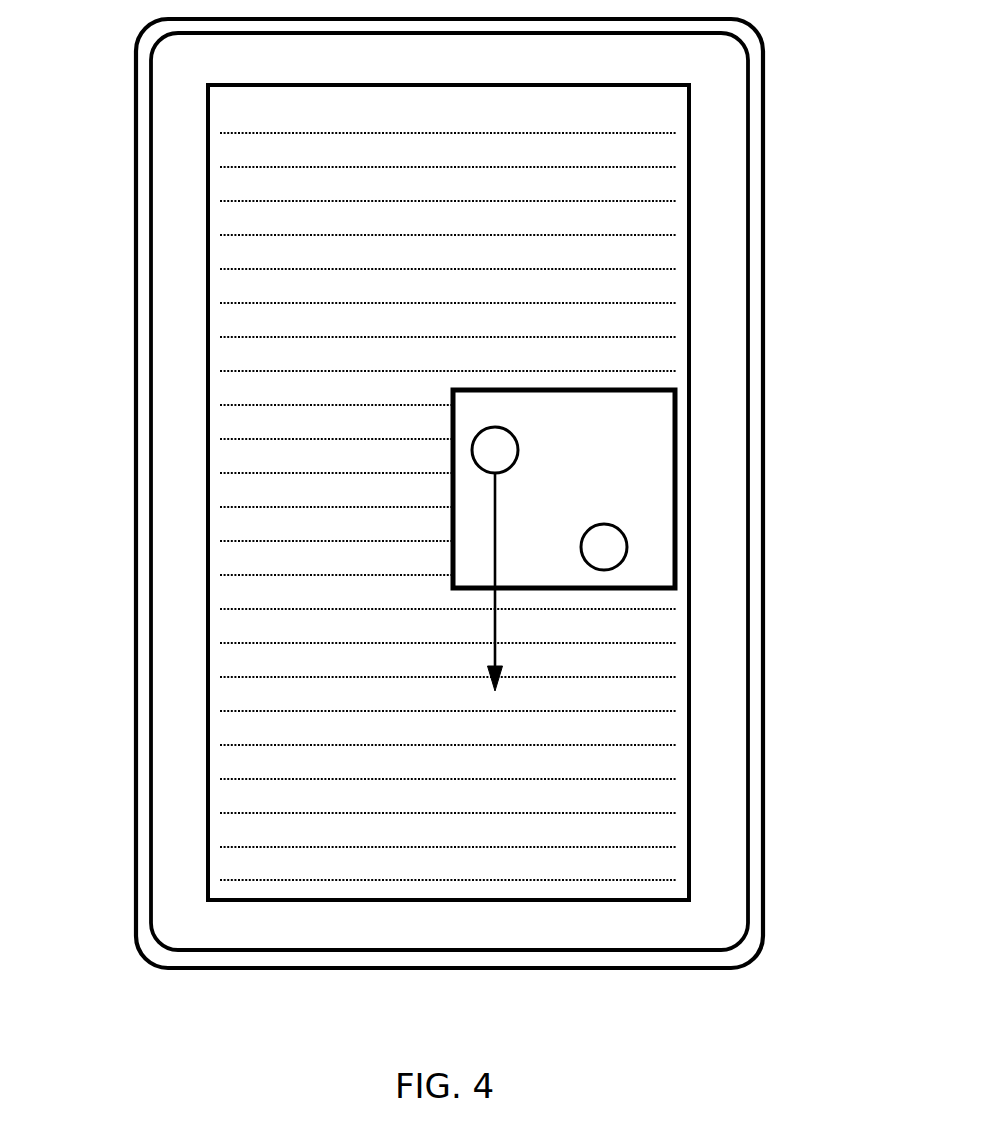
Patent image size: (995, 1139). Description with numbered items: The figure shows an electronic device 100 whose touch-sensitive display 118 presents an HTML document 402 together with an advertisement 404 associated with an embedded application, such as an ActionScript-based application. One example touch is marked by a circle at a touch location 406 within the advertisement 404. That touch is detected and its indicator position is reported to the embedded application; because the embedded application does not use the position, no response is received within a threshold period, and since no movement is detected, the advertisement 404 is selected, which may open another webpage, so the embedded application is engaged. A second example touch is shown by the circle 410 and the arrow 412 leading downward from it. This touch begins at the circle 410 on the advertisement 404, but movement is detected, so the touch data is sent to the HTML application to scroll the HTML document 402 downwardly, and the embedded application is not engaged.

The electronic device 100 is at (781, 1014).
The touch-sensitive display 118 is at (748, 243).
The HTML document 402 is at (668, 638).
The advertisement 404 is at (647, 468).
The touch location 406 is at (627, 547).
The circle 410 is at (472, 450).
The arrow 412 is at (495, 540).